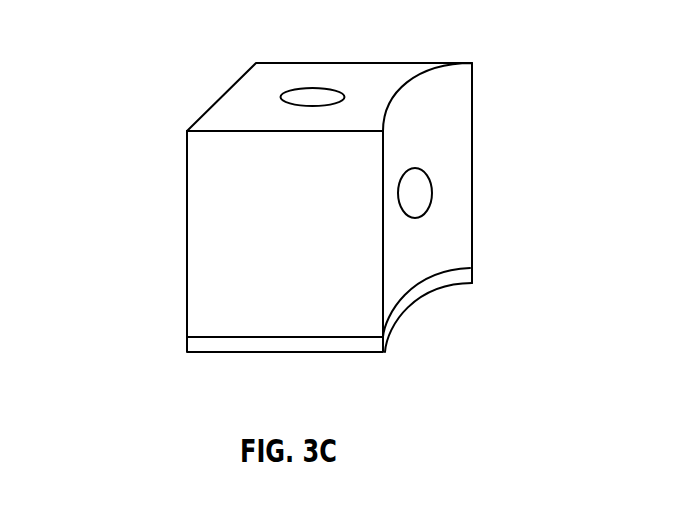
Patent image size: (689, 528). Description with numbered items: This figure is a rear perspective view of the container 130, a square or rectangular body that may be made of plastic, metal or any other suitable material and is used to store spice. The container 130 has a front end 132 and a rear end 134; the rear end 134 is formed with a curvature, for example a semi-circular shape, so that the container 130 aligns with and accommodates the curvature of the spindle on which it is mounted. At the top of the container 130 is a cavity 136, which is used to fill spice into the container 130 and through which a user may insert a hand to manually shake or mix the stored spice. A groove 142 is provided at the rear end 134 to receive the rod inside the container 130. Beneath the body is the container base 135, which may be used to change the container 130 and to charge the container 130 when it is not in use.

The container 130 is at (203, 290).
The front end 132 is at (160, 217).
The rear end 134 is at (492, 144).
The container base 135 is at (412, 301).
The cavity 136 is at (312, 88).
The groove 142 is at (432, 193).